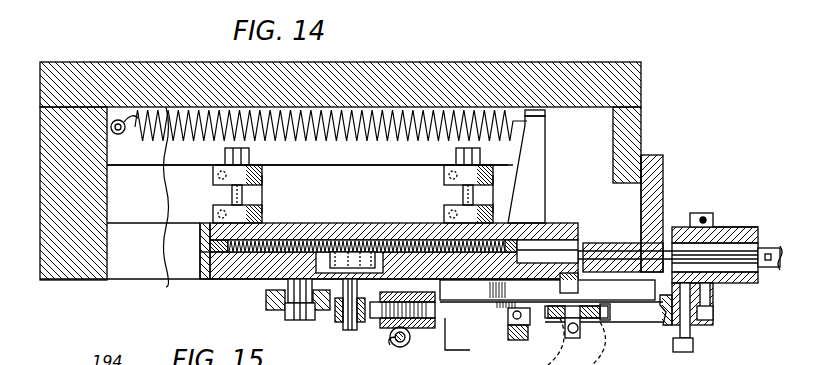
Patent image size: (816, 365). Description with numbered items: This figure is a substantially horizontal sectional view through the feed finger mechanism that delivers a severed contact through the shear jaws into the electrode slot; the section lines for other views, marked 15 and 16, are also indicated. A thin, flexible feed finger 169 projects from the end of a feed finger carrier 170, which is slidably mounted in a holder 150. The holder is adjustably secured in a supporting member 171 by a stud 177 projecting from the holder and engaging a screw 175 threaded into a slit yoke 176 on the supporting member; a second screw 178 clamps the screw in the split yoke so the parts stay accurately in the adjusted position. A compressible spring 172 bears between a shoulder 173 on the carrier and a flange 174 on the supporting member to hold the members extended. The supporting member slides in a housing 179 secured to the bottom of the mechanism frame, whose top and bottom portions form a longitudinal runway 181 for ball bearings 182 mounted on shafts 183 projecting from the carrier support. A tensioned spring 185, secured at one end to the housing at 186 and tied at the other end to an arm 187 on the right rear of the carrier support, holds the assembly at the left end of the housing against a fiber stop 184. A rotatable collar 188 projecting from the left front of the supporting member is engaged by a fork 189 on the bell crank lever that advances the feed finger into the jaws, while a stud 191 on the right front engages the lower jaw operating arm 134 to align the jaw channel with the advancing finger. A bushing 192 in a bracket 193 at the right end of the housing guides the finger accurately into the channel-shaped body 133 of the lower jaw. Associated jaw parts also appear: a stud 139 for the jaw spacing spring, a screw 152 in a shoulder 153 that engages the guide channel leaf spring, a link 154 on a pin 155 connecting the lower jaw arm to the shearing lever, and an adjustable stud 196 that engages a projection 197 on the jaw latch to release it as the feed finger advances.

The section line 15 is at (181, 270).
The section line 16 is at (440, 97).
The channel-shaped body 133 is at (760, 228).
The offset operating arm 134 is at (454, 293).
The stud 139 is at (693, 346).
The holder 150 is at (362, 255).
The screw 152 is at (705, 218).
The shoulder 153 is at (718, 225).
The link 154 is at (592, 306).
The pin 155 is at (599, 341).
The feed finger 169 is at (768, 263).
The feed finger carrier 170 is at (560, 252).
The supporting member 171 is at (578, 286).
The compressible spring 172 is at (306, 245).
The shoulder 173 is at (551, 226).
The flange 174 is at (200, 243).
The screw 175 is at (385, 322).
The slit yoke 176 is at (389, 346).
The stud 177 is at (348, 318).
The screw 178 is at (400, 338).
The housing 179 is at (50, 113).
The longitudinal runway 181 is at (336, 178).
The ball bearings 182 is at (264, 206).
The shafts 183 is at (236, 192).
The fiber stop 184 is at (200, 257).
The tensioned spring 185 is at (150, 110).
The spring anchorage 186 is at (118, 120).
The arm 187 is at (544, 152).
The rotatable collar 188 is at (298, 304).
The fork 189 is at (266, 297).
The stud 191 is at (556, 284).
The bushing 192 is at (656, 200).
The bracket 193 is at (640, 246).
The adjustable stud 196 is at (510, 329).
The projection 197 is at (570, 336).